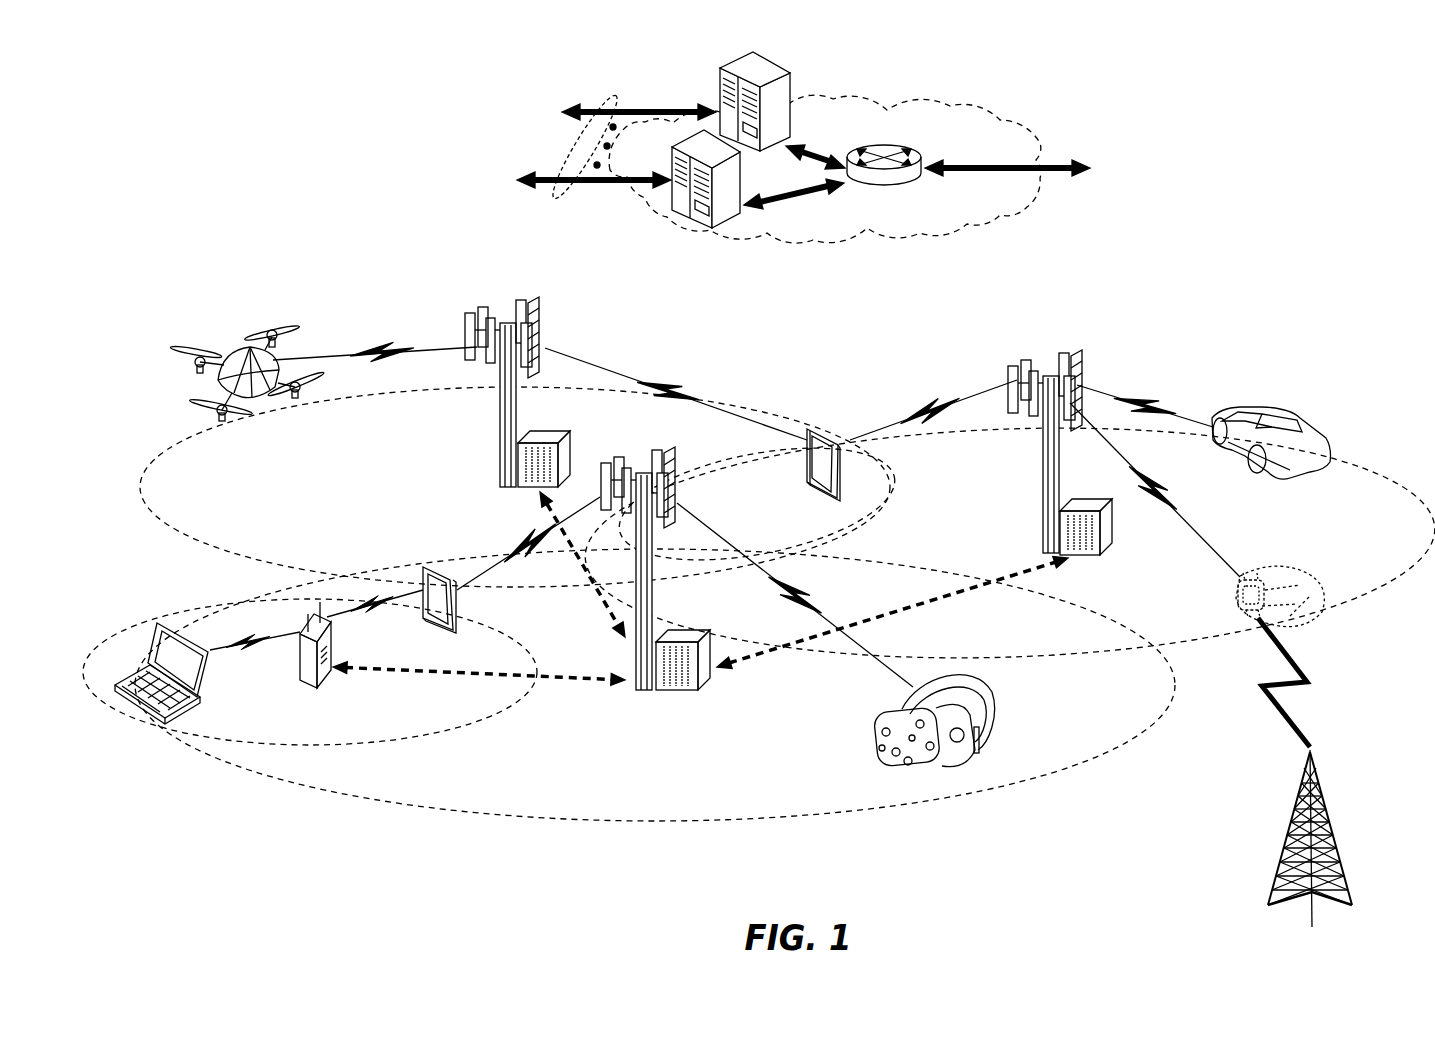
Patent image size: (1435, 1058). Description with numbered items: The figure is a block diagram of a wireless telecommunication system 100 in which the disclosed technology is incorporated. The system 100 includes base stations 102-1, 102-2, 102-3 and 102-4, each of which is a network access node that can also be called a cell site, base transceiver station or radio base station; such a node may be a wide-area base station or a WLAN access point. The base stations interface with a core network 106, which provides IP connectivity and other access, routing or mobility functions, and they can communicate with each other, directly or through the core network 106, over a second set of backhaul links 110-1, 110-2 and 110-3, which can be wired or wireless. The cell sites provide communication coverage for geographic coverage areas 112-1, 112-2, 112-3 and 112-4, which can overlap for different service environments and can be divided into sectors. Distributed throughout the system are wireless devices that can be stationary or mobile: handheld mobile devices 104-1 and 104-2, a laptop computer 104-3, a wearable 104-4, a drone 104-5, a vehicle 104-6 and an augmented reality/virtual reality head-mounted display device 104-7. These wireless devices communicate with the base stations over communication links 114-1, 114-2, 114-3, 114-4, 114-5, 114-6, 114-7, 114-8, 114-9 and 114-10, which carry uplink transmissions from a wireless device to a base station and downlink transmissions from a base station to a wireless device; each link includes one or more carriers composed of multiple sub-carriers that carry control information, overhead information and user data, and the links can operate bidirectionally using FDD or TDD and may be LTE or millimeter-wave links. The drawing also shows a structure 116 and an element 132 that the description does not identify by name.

The wireless telecommunication system 100 is at (1351, 151).
The base station 102-1 is at (640, 692).
The base station 102-2 is at (498, 432).
The base station 102-3 is at (1043, 470).
The base station 102-4 is at (302, 678).
The wireless device 104-1 is at (464, 613).
The wireless device 104-2 is at (801, 462).
The wireless device 104-3 is at (140, 709).
The wireless device 104-4 is at (1265, 577).
The wireless device 104-5 is at (258, 398).
The wireless device 104-6 is at (1298, 421).
The wireless device 104-7 is at (988, 698).
The core network 106 is at (920, 238).
The backhaul link 110-1 is at (370, 673).
The backhaul link 110-2 is at (955, 596).
The backhaul link 110-3 is at (600, 596).
The geographic coverage area 112-1 is at (560, 829).
The geographic coverage area 112-2 is at (440, 733).
The geographic coverage area 112-3 is at (200, 545).
The geographic coverage area 112-4 is at (1355, 468).
The communication link 114-1 is at (810, 600).
The communication link 114-2 is at (525, 548).
The communication link 114-3 is at (252, 650).
The communication link 114-4 is at (372, 614).
The communication link 114-5 is at (380, 346).
The communication link 114-6 is at (673, 384).
The communication link 114-7 is at (930, 406).
The communication link 114-8 is at (1178, 512).
The communication link 114-9 is at (1148, 402).
The communication link 114-10 is at (1292, 688).
The broadcast tower 116 is at (1330, 821).
The satellite link 132 is at (572, 192).